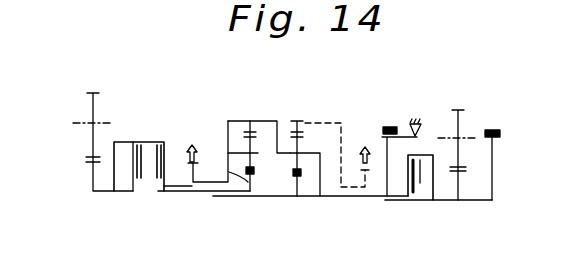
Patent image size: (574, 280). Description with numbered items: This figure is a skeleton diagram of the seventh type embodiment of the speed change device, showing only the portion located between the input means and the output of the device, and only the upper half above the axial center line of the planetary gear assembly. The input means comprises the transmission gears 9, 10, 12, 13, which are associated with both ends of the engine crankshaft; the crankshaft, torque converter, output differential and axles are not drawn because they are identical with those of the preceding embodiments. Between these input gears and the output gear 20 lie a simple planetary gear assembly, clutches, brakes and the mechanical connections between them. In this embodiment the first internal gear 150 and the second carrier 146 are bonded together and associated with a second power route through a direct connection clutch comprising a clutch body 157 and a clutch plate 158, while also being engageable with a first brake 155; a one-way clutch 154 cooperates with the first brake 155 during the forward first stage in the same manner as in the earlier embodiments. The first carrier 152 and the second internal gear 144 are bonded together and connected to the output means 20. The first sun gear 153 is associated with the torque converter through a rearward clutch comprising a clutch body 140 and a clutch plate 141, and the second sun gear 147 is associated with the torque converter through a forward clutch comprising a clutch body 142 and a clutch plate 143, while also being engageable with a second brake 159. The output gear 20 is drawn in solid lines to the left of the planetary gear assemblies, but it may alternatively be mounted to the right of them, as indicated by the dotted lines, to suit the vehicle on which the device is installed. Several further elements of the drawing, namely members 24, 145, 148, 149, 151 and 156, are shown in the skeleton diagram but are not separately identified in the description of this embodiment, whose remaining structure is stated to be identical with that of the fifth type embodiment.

The transmission gear 9 is at (93, 137).
The transmission gear 10 is at (93, 176).
The transmission gear 12 is at (458, 153).
The transmission gear 13 is at (458, 186).
The output gear 20 is at (187, 172).
The shaft 24 is at (445, 200).
The clutch body 140 is at (157, 172).
The clutch plate 141 is at (170, 192).
The clutch body 142 is at (128, 168).
The clutch plate 143 is at (133, 176).
The second internal gear 144 is at (302, 120).
The gear carrier 145 is at (311, 152).
The second carrier 146 is at (303, 141).
The second sun gear 147 is at (298, 180).
The clutch 148 is at (273, 196).
The carrier 149 is at (218, 195).
The first internal gear 150 is at (253, 152).
The gear 151 is at (253, 130).
The first carrier 152 is at (240, 150).
The first sun gear 153 is at (205, 141).
The one-way clutch 154 is at (418, 121).
The first brake 155 is at (390, 126).
The optional unit 156 is at (353, 195).
The clutch body 157 is at (420, 183).
The clutch plate 158 is at (408, 196).
The second brake 159 is at (493, 128).